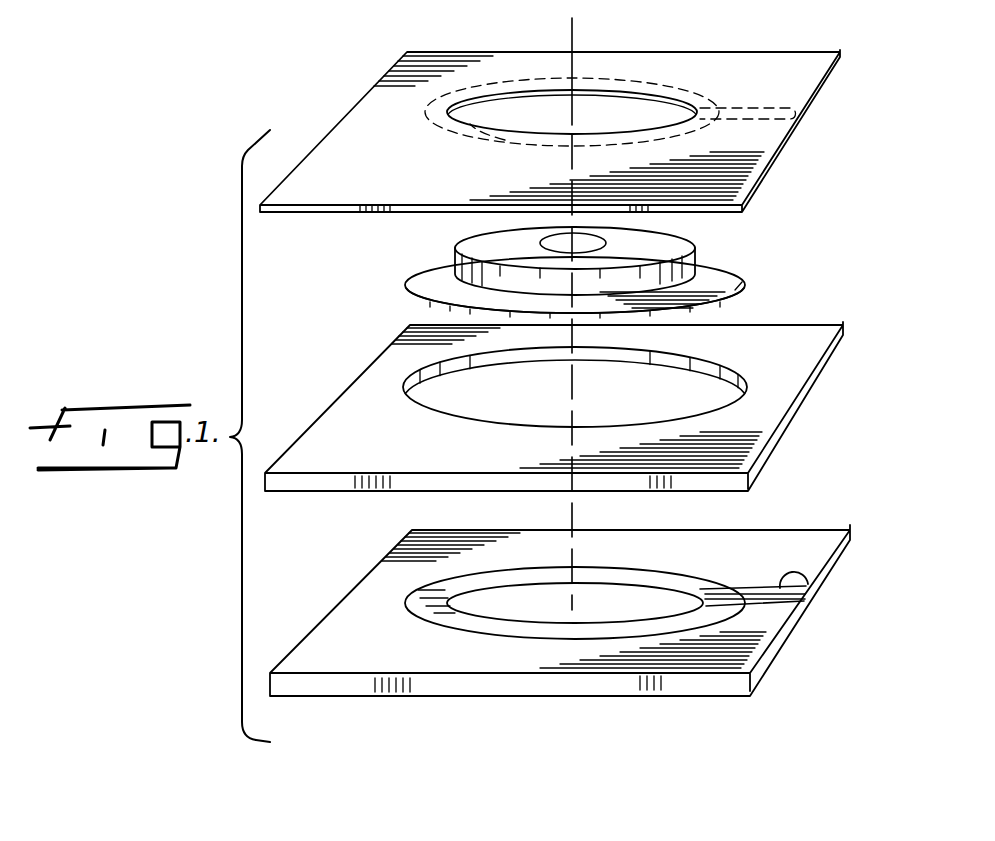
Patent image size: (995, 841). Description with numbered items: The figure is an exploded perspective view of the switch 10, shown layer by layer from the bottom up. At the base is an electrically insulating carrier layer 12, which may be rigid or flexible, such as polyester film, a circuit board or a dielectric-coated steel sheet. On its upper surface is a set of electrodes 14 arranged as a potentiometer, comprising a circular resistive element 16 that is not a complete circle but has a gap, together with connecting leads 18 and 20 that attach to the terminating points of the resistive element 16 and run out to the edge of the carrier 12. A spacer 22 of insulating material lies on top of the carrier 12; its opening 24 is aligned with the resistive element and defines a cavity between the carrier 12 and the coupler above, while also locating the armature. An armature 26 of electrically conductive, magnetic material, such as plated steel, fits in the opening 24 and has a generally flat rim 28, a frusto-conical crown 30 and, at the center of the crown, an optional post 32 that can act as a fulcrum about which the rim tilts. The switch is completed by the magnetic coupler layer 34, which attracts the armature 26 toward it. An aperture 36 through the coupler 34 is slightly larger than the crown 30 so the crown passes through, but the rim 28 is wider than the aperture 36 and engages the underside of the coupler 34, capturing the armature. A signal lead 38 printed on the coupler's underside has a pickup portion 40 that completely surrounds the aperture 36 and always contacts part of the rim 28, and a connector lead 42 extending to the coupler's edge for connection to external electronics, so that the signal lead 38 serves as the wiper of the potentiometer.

The switch 10 is at (877, 311).
The carrier layer 12 is at (338, 608).
The set of electrodes 14 is at (522, 624).
The circular resistive element 16 is at (437, 590).
The connecting lead 18 is at (790, 584).
The connecting lead 20 is at (773, 607).
The spacer 22 is at (767, 453).
The opening 24 is at (484, 416).
The armature 26 is at (400, 291).
The rim 28 is at (742, 280).
The frusto-conical crown 30 is at (695, 262).
The post 32 is at (539, 244).
The coupler layer 34 is at (358, 112).
The aperture 36 is at (535, 100).
The signal lead 38 is at (599, 80).
The pickup portion 40 is at (505, 140).
The connector lead 42 is at (795, 104).